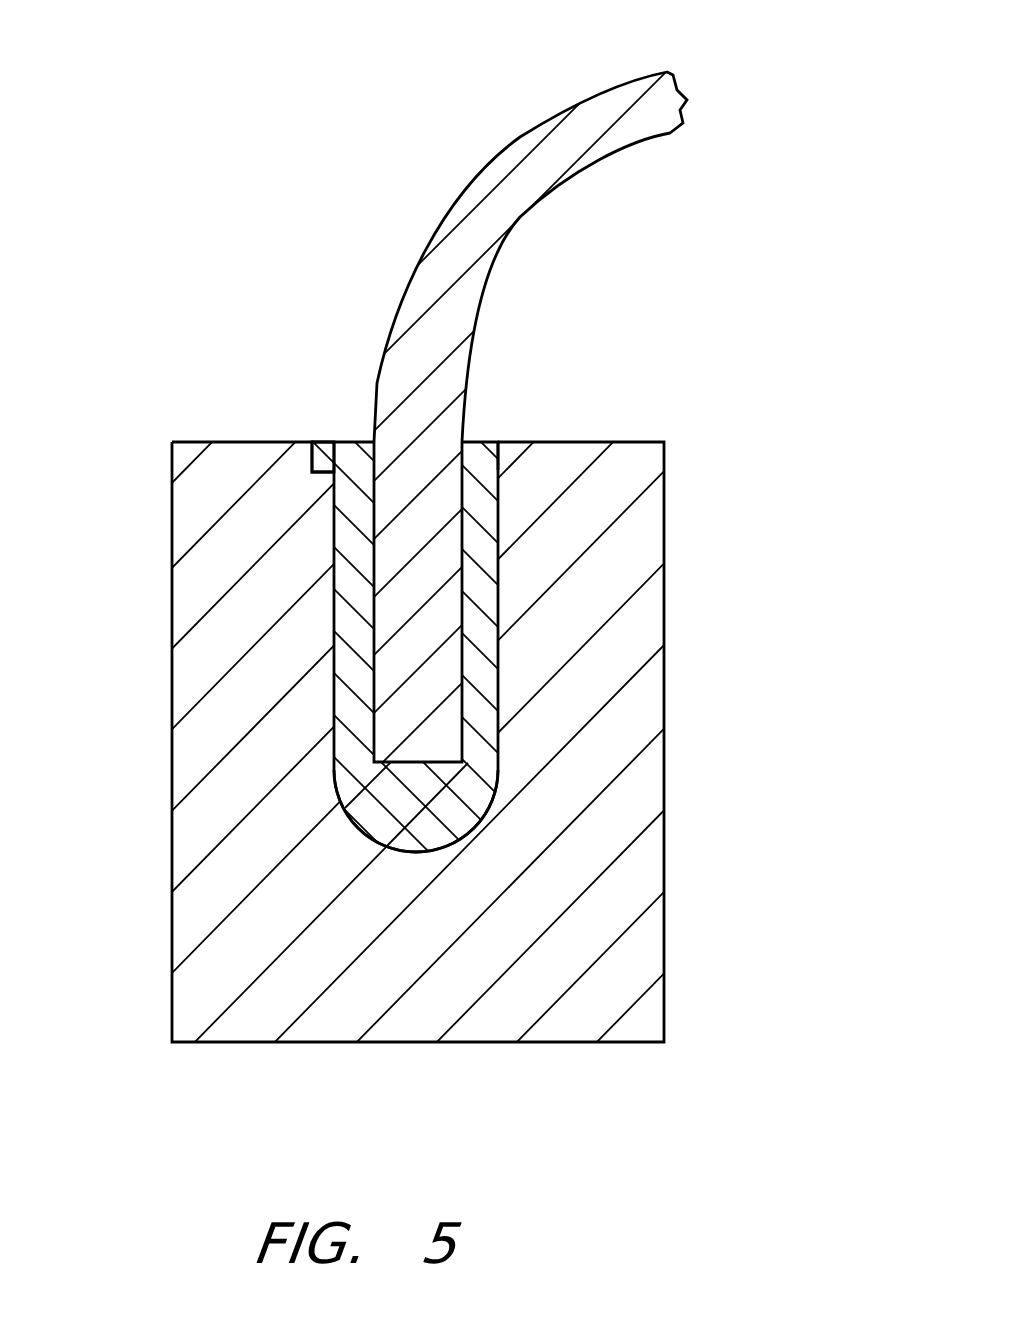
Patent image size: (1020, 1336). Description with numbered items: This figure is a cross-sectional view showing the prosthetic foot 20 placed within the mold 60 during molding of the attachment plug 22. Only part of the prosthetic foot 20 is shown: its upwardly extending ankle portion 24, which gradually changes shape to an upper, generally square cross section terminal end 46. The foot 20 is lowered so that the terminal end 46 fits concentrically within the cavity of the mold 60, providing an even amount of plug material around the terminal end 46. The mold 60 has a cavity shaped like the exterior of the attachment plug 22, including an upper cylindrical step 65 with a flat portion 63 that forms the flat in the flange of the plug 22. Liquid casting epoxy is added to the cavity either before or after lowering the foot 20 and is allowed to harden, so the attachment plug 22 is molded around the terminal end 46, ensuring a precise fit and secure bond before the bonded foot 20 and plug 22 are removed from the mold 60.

The prosthetic foot 20 is at (473, 103).
The attachment plug 22 is at (500, 612).
The ankle portion 24 is at (385, 330).
The terminal end 46 is at (345, 808).
The mold 60 is at (712, 772).
The flat portion 63 is at (483, 440).
The upper cylindrical step 65 is at (338, 442).